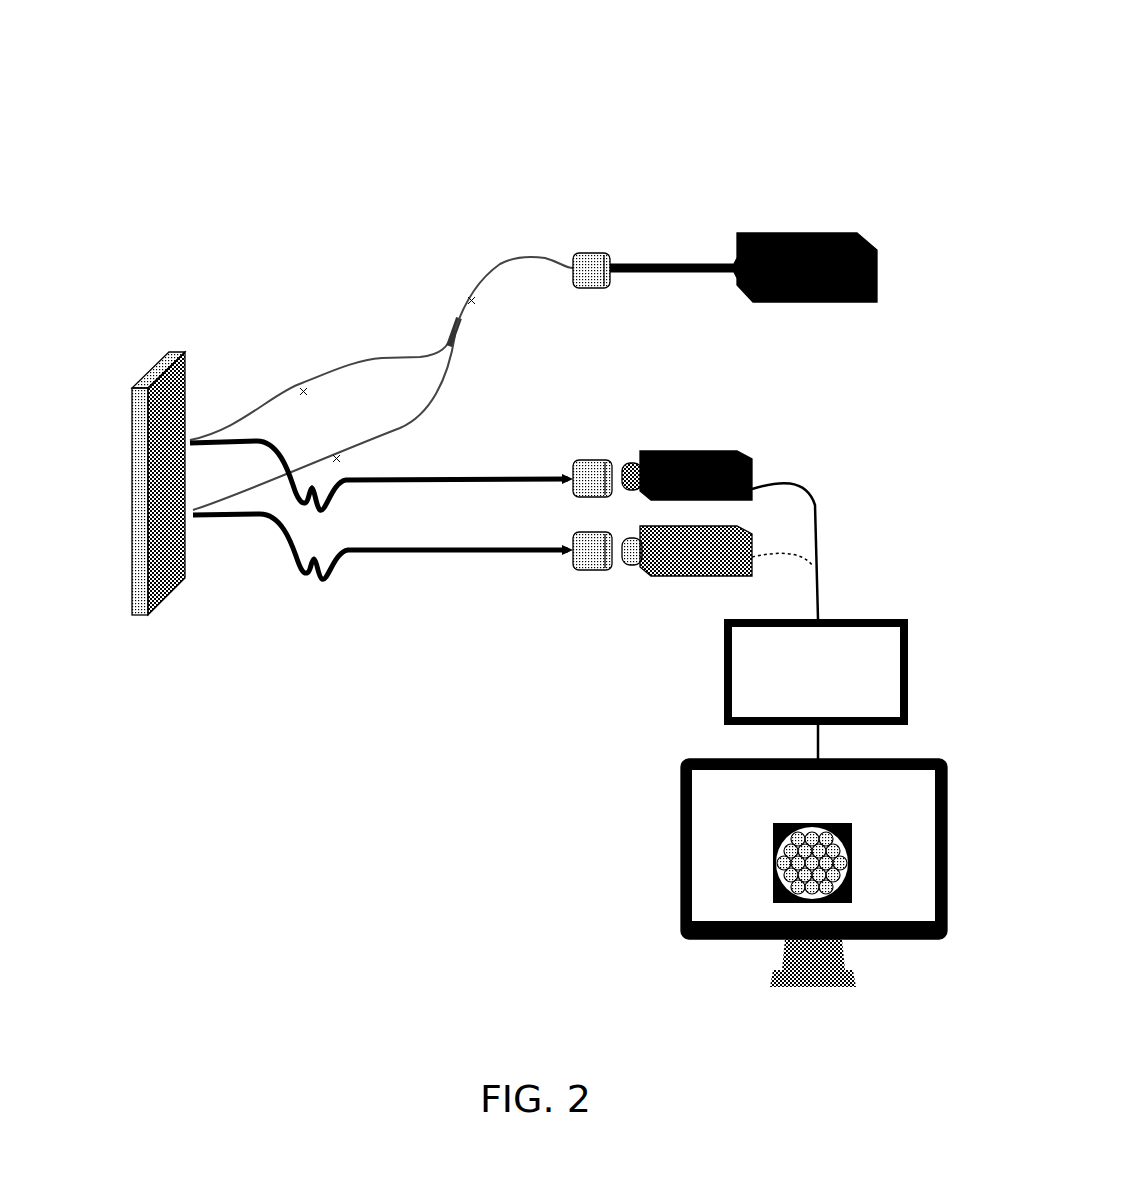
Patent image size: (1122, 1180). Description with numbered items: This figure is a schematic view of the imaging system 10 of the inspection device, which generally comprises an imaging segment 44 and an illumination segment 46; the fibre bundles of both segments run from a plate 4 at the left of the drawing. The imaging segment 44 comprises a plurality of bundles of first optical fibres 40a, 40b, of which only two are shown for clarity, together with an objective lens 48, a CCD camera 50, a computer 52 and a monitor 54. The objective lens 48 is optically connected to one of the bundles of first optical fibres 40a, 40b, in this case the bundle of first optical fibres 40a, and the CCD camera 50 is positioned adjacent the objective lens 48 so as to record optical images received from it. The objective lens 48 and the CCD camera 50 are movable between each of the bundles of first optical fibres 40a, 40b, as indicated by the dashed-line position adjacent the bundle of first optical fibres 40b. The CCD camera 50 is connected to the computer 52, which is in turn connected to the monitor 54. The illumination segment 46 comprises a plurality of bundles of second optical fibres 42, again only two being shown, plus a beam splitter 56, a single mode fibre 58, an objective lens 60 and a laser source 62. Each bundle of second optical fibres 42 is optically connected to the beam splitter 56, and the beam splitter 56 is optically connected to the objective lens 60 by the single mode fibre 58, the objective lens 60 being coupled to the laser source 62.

The sample plate 4 is at (145, 575).
The imaging system 10 is at (727, 108).
The bundle of first optical fibres 40a is at (493, 477).
The bundle of first optical fibres 40b is at (478, 553).
The bundles of second optical fibres 42 is at (328, 378).
The imaging segment 44 is at (573, 397).
The illumination segment 46 is at (488, 192).
The objective lens 48 is at (593, 460).
The CCD camera 50 is at (710, 451).
The computer 52 is at (866, 618).
The monitor 54 is at (681, 855).
The beam splitter 56 is at (456, 322).
The single mode fibre 58 is at (529, 257).
The objective lens 60 is at (599, 253).
The laser source 62 is at (800, 233).